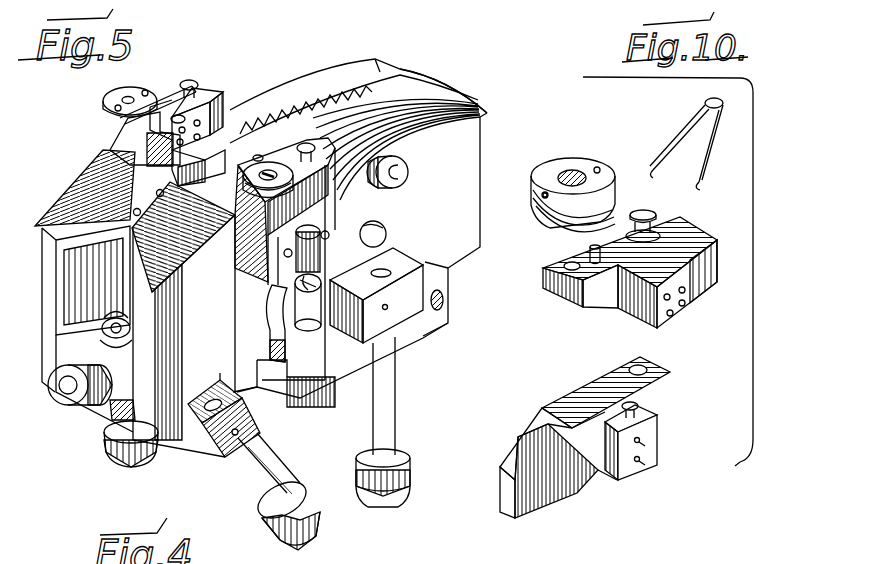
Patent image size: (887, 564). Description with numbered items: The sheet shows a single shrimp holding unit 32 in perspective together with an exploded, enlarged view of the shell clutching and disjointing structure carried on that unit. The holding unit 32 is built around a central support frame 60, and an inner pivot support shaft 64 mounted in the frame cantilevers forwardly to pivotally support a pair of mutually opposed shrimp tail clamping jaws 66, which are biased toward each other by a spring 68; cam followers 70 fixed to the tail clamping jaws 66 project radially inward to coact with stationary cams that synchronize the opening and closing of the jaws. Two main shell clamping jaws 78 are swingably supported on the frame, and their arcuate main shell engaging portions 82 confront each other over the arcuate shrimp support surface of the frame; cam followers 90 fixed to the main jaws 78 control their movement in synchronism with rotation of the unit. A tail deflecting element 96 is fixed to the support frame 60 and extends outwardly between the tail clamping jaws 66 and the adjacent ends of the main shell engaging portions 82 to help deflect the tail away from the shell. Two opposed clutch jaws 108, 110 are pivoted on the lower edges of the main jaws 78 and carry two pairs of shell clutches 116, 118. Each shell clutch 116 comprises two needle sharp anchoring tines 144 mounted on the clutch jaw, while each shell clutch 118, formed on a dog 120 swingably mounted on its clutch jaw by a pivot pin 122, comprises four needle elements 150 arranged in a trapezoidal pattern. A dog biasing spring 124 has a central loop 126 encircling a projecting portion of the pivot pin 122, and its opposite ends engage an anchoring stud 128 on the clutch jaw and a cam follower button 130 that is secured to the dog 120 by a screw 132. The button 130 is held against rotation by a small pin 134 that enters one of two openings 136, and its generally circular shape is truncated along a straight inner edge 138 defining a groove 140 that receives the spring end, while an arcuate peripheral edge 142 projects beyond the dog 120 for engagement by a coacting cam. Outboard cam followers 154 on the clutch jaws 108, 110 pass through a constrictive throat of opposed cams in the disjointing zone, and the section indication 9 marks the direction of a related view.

In FIG. 5, the section line 9 is at (116, 88).
In FIG. 5, the shrimp holding unit 32 is at (87, 193).
In FIG. 5, the central support frame 60 is at (427, 323).
In FIG. 5, the inner pivot support shaft 64 is at (72, 392).
In FIG. 5, the shrimp tail clamping jaws 66 is at (216, 229).
In FIG. 5, the spring 68 is at (113, 323).
In FIG. 5, the cam followers 70 is at (124, 458).
In FIG. 5, the main shell clamping jaws 78 is at (323, 62).
In FIG. 5, the arcuate main shell engaging portions 82 is at (380, 68).
In FIG. 5, the cam followers 90 is at (397, 477).
In FIG. 5, the tail deflecting element 96 is at (166, 219).
In FIG. 5, the clutch jaw 108 is at (124, 153).
In FIG. 10, the clutch jaw 108 is at (500, 503).
In FIG. 5, the clutch jaw 110 is at (320, 203).
In FIG. 5, the shell clutch 116 is at (167, 143).
In FIG. 10, the shell clutch 116 is at (673, 452).
In FIG. 5, the shell clutch 118 is at (205, 95).
In FIG. 10, the shell clutch 118 is at (689, 315).
In FIG. 5, the dog 120 is at (200, 84).
In FIG. 10, the dog 120 is at (693, 237).
In FIG. 10, the pivot pin 122 is at (648, 216).
In FIG. 10, the dog biasing spring 124 is at (740, 160).
In FIG. 10, the central loop 126 is at (693, 118).
In FIG. 10, the anchoring stud 128 is at (653, 397).
In FIG. 5, the cam follower button 130 is at (133, 90).
In FIG. 10, the cam follower button 130 is at (598, 143).
In FIG. 5, the screw 132 is at (107, 110).
In FIG. 10, the pin 134 is at (560, 248).
In FIG. 10, the openings 136 is at (546, 192).
In FIG. 10, the straight inner edge 138 is at (563, 235).
In FIG. 10, the groove 140 is at (617, 200).
In FIG. 10, the arcuate peripheral edge 142 is at (524, 194).
In FIG. 10, the anchoring tines 144 is at (635, 442).
In FIG. 10, the needle elements 150 is at (686, 304).
In FIG. 5, the outboard cam followers 154 is at (317, 263).